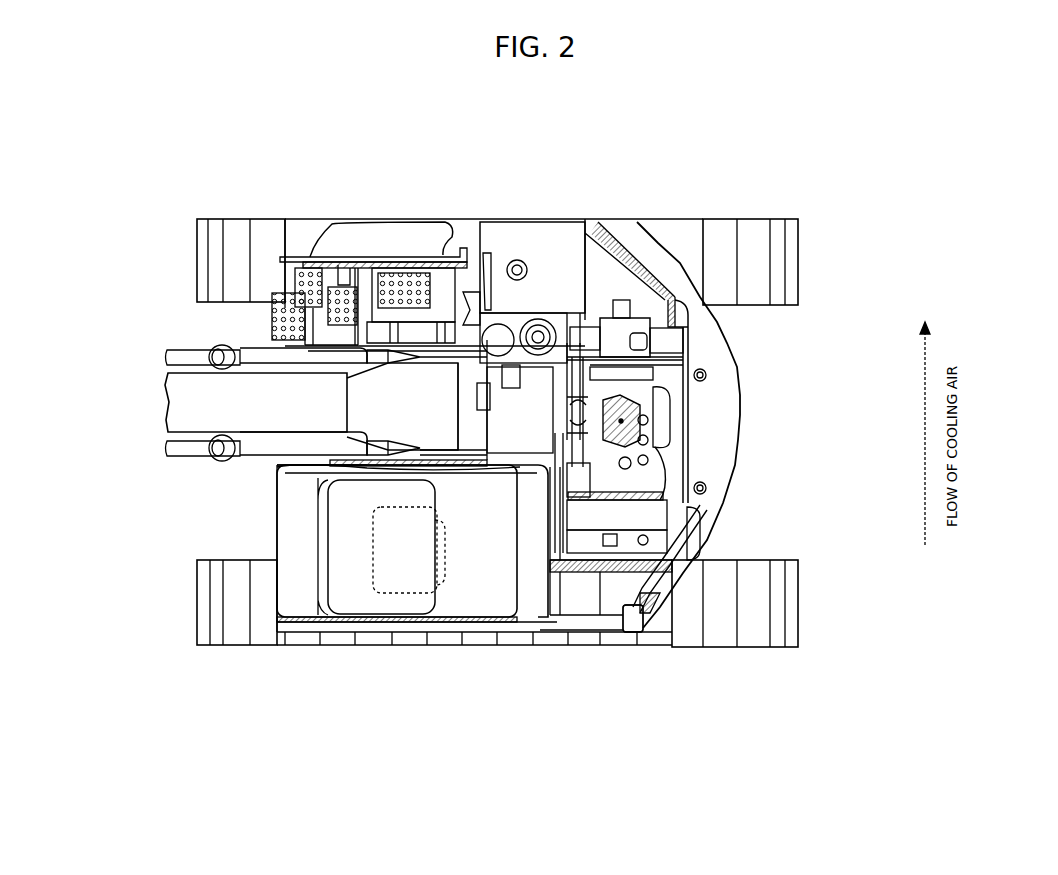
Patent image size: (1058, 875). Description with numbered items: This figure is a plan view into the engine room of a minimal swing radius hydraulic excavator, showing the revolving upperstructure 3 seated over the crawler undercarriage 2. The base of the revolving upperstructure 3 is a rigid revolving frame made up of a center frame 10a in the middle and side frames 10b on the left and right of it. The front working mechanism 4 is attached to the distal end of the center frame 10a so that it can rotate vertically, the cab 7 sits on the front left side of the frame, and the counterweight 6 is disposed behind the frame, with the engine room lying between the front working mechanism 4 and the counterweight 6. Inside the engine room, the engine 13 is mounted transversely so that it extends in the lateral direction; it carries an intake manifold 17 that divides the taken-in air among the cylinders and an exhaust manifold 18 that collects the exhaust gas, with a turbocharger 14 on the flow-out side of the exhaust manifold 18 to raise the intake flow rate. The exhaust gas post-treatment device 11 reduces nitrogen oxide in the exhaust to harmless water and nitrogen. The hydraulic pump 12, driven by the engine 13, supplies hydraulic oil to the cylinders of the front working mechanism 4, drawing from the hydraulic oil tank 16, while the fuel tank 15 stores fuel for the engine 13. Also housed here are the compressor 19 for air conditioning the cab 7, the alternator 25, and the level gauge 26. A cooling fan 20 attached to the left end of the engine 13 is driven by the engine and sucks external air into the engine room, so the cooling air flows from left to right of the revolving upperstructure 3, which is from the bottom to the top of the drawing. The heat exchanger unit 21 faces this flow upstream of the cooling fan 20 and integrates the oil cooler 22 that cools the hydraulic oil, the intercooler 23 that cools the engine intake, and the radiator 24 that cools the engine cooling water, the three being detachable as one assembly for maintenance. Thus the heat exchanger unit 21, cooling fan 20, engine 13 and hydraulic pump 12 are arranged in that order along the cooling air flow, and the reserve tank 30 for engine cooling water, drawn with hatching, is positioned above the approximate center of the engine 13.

The lower traveling body (crawler) 2 is at (243, 216).
The revolving upperstructure 3 is at (736, 524).
The front working mechanism 4 is at (165, 392).
The counterweight 6 is at (717, 306).
The cab 7 is at (365, 605).
The center frame 10a is at (367, 468).
The side frame 10b is at (583, 218).
The exhaust gas post-treatment device 11 is at (710, 247).
The hydraulic pump 12 is at (672, 262).
The engine 13 is at (690, 350).
The turbocharger 14 is at (553, 398).
The fuel tank 15 is at (525, 218).
The hydraulic oil tank 16 is at (490, 218).
The intake manifold 17 is at (707, 377).
The exhaust manifold 18 is at (570, 440).
The compressor 19 is at (693, 457).
The cooling fan 20 is at (707, 500).
The heat exchanger unit 21 is at (533, 692).
The oil cooler 22 is at (573, 580).
The intercooler 23 is at (607, 573).
The radiator 24 is at (643, 622).
The alternator 25 is at (580, 470).
The level gauge 26 is at (600, 510).
The reserve tank 30 is at (660, 407).